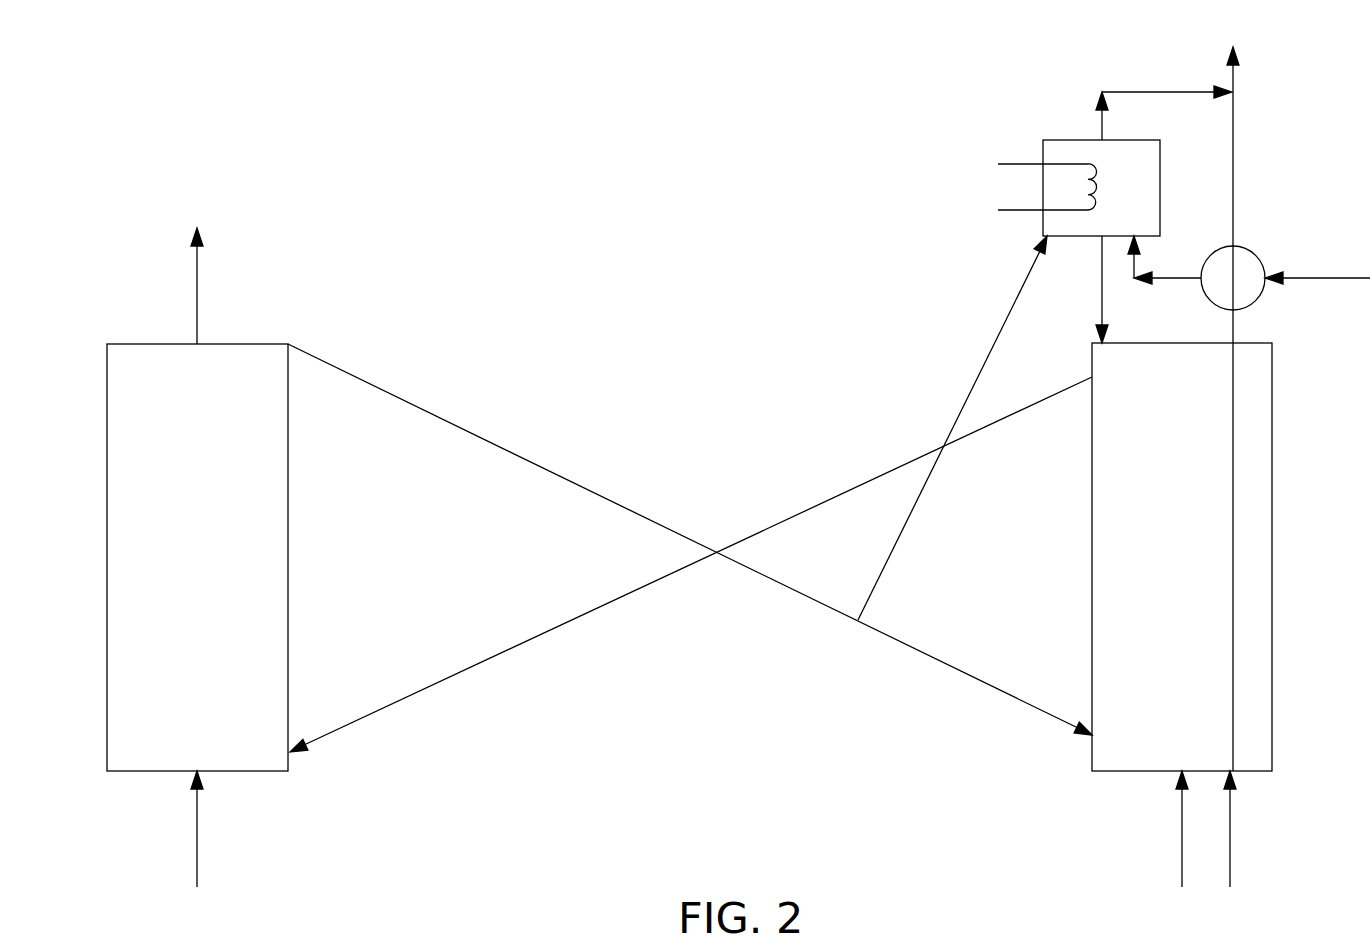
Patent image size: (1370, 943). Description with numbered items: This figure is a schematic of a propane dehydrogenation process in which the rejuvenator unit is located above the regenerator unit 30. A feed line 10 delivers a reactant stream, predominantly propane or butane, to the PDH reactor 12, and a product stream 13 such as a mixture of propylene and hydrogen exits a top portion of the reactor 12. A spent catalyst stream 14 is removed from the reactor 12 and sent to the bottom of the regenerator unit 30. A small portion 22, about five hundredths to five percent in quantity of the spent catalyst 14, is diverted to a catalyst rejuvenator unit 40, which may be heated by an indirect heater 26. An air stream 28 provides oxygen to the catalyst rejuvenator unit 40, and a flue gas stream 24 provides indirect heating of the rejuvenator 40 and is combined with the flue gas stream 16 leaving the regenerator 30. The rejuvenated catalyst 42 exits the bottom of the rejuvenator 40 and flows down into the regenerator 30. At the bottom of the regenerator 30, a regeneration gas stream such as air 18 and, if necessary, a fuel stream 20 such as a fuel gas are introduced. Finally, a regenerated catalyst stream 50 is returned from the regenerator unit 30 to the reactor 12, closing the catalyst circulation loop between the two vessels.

The feed line 10 is at (196, 827).
The PDH reactor 12 is at (125, 342).
The product stream 13 is at (196, 285).
The spent catalyst stream 14 is at (927, 655).
The flue gas stream 16 is at (1236, 178).
The air 18 is at (1180, 827).
The fuel stream 20 is at (1235, 826).
The small portion of spent catalyst 22 is at (988, 360).
The flue gas stream 24 is at (1168, 88).
The indirect heater 26 is at (1006, 164).
The air stream 28 is at (1336, 275).
The regenerator unit 30 is at (1258, 342).
The catalyst rejuvenator unit 40 is at (1050, 139).
The rejuvenated catalyst 42 is at (1098, 291).
The regenerated catalyst stream 50 is at (1026, 408).